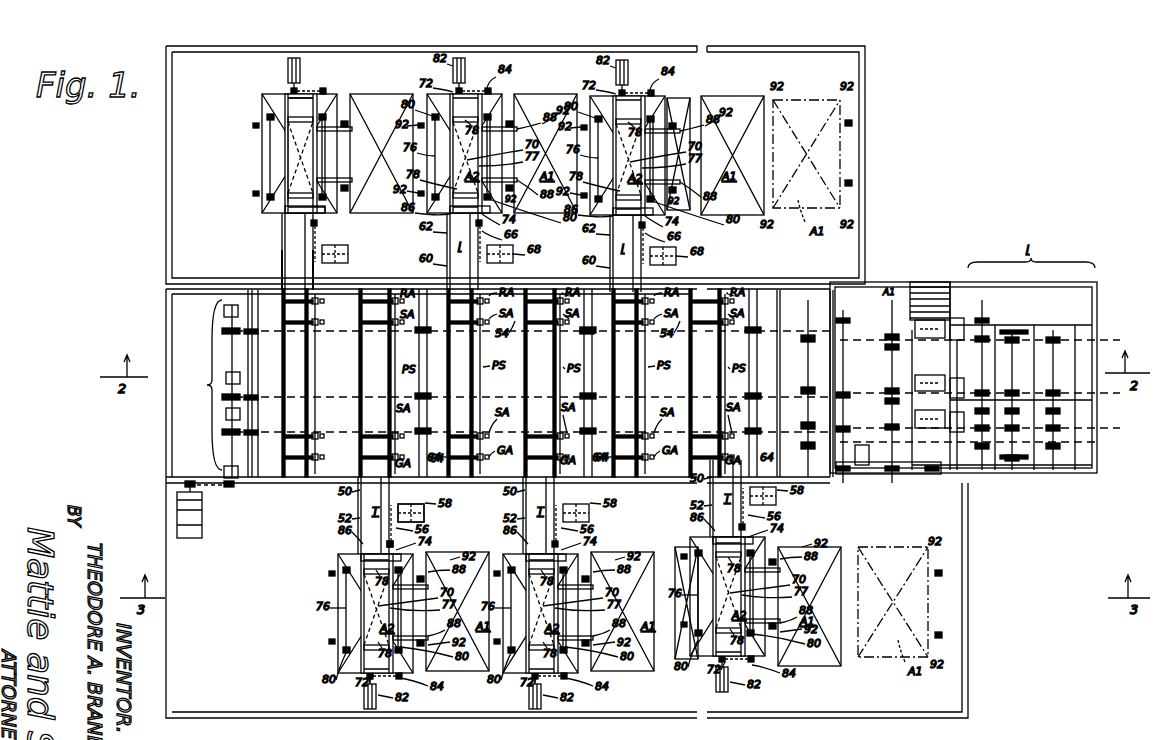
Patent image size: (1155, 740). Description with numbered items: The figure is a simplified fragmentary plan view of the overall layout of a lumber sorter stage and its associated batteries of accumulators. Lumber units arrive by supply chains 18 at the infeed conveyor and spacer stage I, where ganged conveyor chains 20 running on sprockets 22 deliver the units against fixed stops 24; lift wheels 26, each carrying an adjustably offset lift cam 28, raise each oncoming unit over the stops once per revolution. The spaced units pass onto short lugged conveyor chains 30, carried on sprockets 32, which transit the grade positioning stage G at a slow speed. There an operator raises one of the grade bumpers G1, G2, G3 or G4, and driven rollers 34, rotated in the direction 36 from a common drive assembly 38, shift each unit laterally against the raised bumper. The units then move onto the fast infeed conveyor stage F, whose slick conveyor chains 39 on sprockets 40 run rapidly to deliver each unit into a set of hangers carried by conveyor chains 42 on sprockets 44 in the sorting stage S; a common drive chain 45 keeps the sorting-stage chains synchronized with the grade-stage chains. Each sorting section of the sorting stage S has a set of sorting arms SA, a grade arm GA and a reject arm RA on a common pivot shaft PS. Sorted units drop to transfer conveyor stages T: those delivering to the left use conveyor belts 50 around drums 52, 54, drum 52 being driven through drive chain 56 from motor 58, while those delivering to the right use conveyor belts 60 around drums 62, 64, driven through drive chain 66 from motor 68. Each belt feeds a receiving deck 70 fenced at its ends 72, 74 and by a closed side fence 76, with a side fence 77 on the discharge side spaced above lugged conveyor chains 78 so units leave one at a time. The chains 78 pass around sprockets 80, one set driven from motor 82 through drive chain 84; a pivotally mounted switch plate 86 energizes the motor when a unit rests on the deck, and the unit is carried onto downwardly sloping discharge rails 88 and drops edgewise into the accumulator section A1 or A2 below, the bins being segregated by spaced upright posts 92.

The chains 18 is at (1110, 340).
The ganged conveyor chains 20 is at (1035, 335).
The sprockets 22 is at (1060, 338).
The fixed stops 24 is at (1016, 390).
The lift wheels 26 is at (1008, 325).
The lift cam 28 is at (1016, 330).
The lugged conveyor chains 30 is at (925, 340).
The sprockets 32 is at (962, 342).
The driven rollers 34 is at (928, 375).
The direction of rotation 36 is at (950, 422).
The common drive assembly 38 is at (964, 385).
The slick conveyor chains 39 is at (864, 392).
The sprockets 40 is at (804, 340).
The conveyor chains 42 is at (662, 330).
The sprockets 44 is at (240, 338).
The common drive chain 45 is at (880, 478).
The conveyor belts 50 is at (360, 490).
The drum 52 is at (360, 518).
The drum 54 is at (708, 320).
The drive chain 56 is at (396, 528).
The motor 58 is at (425, 503).
The conveyor belts 60 is at (282, 266).
The drum 62 is at (282, 233).
The drum 64 is at (282, 458).
The drive chain 66 is at (317, 231).
The motor 68 is at (348, 254).
The receiving deck 70 is at (302, 160).
The end fence 72 is at (288, 92).
The end fence 74 is at (317, 214).
The closed side fence 76 is at (270, 156).
The side fence 77 is at (314, 166).
The lugged conveyor chains 78 is at (300, 120).
The sprockets 80 is at (270, 117).
The motor 82 is at (288, 66).
The drive chain 84 is at (322, 88).
The take-off drive control switch plate 86 is at (285, 214).
The discharge rails 88 is at (352, 129).
The upright posts 92 is at (253, 125).
The accumulator section A1 is at (381, 153).
The accumulator section A2 is at (307, 176).
The infeed conveyor and spacer stage I is at (294, 246).
The transfer conveyor stage T is at (376, 511).
The pivot shaft PS is at (318, 368).
The reject arm RA is at (324, 297).
The sorting arms SA is at (324, 320).
The grade arm GA is at (324, 458).
The sorting stage S is at (225, 384).
The fast infeed conveyor stage F is at (808, 500).
The grade positioning stage G is at (960, 268).
The grade bumper G1 is at (910, 294).
The grade bumper G2 is at (910, 300).
The grade bumper G3 is at (910, 307).
The grade bumper G4 is at (910, 314).